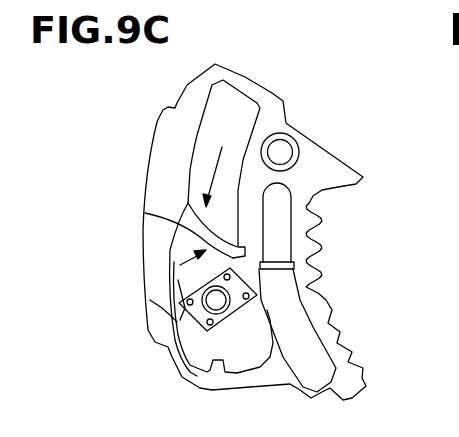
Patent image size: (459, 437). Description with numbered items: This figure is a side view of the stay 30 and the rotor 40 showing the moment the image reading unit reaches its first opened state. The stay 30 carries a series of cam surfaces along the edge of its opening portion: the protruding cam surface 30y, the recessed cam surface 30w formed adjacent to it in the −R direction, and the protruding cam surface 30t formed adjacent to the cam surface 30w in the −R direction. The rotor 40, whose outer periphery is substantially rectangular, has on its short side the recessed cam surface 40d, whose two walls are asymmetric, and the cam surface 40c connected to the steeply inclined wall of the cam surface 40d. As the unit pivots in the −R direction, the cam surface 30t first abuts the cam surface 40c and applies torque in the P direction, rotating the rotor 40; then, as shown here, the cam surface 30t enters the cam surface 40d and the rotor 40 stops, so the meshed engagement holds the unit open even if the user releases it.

The stay 30 is at (323, 172).
The cam surface 30y is at (188, 203).
The cam surface 30w is at (145, 213).
The cam surface 30t is at (178, 280).
The rotor 40 is at (172, 331).
The cam surface 40c is at (248, 258).
The cam surface 40d is at (265, 282).